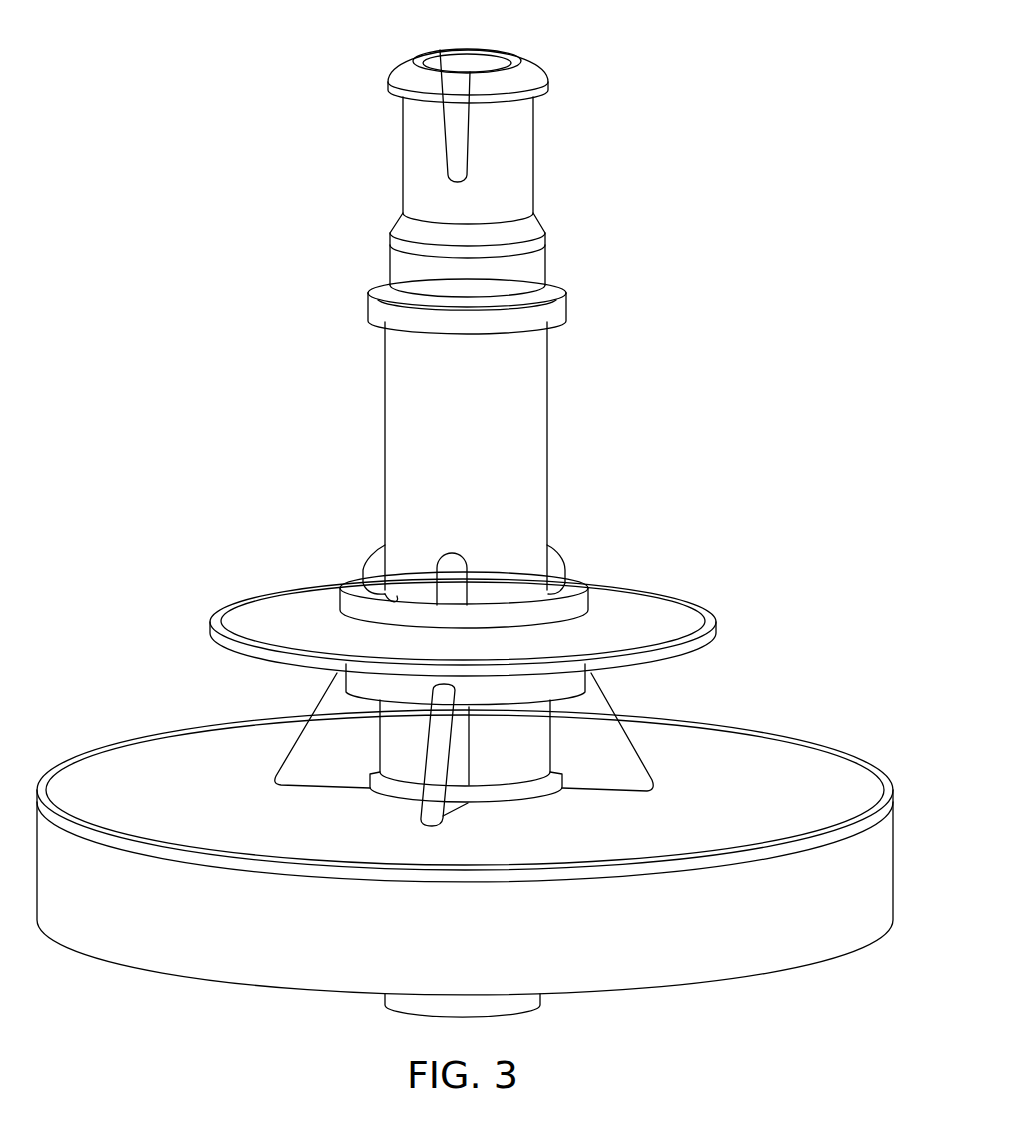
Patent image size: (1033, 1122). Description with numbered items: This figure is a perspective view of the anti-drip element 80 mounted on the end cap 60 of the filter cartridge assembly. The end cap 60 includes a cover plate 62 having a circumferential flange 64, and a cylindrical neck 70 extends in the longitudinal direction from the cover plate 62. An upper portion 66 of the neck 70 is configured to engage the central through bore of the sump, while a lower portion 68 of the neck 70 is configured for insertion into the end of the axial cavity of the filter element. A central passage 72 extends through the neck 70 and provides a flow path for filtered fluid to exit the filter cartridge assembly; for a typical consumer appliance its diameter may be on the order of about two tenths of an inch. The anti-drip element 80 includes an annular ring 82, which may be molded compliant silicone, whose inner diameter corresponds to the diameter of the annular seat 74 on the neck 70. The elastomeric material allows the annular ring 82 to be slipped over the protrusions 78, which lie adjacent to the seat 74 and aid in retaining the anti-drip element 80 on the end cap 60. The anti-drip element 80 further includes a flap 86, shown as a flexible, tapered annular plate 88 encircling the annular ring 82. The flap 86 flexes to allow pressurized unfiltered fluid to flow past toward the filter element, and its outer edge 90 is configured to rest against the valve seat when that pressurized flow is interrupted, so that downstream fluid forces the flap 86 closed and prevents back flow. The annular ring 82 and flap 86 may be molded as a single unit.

The end cap 60 is at (158, 668).
The cover plate 62 is at (806, 780).
The circumferential flange 64 is at (100, 922).
The upper portion 66 is at (420, 178).
The lower portion 68 is at (405, 1003).
The cylindrical neck 70 is at (362, 382).
The central passage 72 is at (476, 62).
The annular seat 74 is at (383, 593).
The protrusions 78 is at (372, 562).
The anti-drip element 80 is at (670, 557).
The annular ring 82 is at (570, 608).
The flap 86 is at (276, 608).
The tapered annular plate 88 is at (667, 615).
The outer edge 90 is at (213, 622).